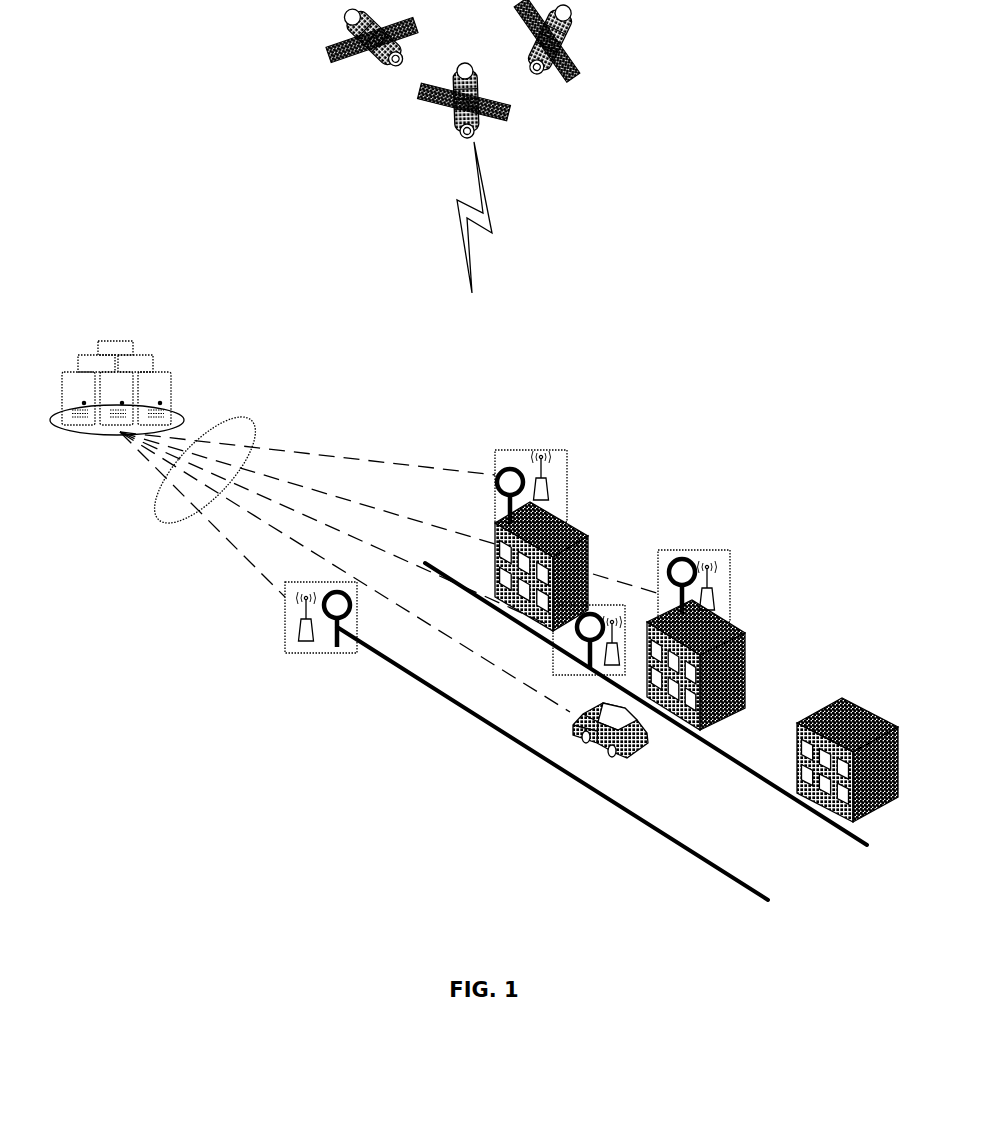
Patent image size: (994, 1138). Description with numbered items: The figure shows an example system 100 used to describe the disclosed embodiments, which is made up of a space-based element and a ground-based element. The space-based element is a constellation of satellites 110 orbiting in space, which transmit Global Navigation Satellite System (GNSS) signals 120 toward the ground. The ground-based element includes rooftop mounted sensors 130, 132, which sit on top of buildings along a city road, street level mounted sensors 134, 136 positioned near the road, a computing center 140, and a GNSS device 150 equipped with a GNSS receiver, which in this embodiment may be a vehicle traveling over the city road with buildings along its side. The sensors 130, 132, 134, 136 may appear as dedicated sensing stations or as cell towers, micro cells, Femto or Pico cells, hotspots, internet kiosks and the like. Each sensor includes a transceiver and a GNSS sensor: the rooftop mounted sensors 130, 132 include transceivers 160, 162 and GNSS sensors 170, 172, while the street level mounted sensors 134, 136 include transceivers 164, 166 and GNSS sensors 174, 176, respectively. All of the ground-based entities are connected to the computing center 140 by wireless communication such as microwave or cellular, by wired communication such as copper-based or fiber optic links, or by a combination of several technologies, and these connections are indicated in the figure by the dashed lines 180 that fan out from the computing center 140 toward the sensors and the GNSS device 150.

The system 100 is at (750, 118).
The satellites 110 is at (505, 110).
The GNSS signals 120 is at (487, 200).
The rooftop mounted sensor 130 is at (510, 450).
The rooftop mounted sensor 132 is at (731, 568).
The street level mounted sensor 134 is at (553, 667).
The street level mounted sensor 136 is at (285, 597).
The computing center 140 is at (162, 368).
The GNSS device 150 is at (642, 752).
The transceiver 160 is at (498, 490).
The transceiver 162 is at (683, 560).
The transceiver 164 is at (578, 640).
The transceiver 166 is at (335, 653).
The GNSS sensor 170 is at (545, 492).
The GNSS sensor 172 is at (717, 600).
The GNSS sensor 174 is at (612, 668).
The GNSS sensor 176 is at (300, 640).
The dashed lines 180 is at (247, 420).